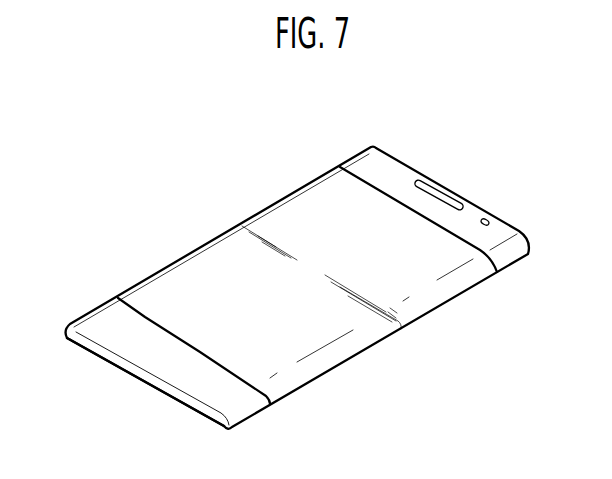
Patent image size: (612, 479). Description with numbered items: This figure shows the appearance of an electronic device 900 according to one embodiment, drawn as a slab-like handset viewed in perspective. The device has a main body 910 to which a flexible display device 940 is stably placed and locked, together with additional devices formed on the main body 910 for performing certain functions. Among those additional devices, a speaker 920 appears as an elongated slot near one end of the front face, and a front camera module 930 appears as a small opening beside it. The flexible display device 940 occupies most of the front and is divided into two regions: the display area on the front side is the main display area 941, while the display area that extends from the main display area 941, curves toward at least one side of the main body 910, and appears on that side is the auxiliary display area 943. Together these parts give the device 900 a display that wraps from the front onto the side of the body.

The electronic device 900 is at (298, 267).
The main body 910 is at (126, 345).
The speaker 920 is at (443, 193).
The front camera module 930 is at (487, 220).
The flexible display device 940 is at (330, 285).
The main display area 941 is at (435, 268).
The auxiliary display area 943 is at (410, 310).